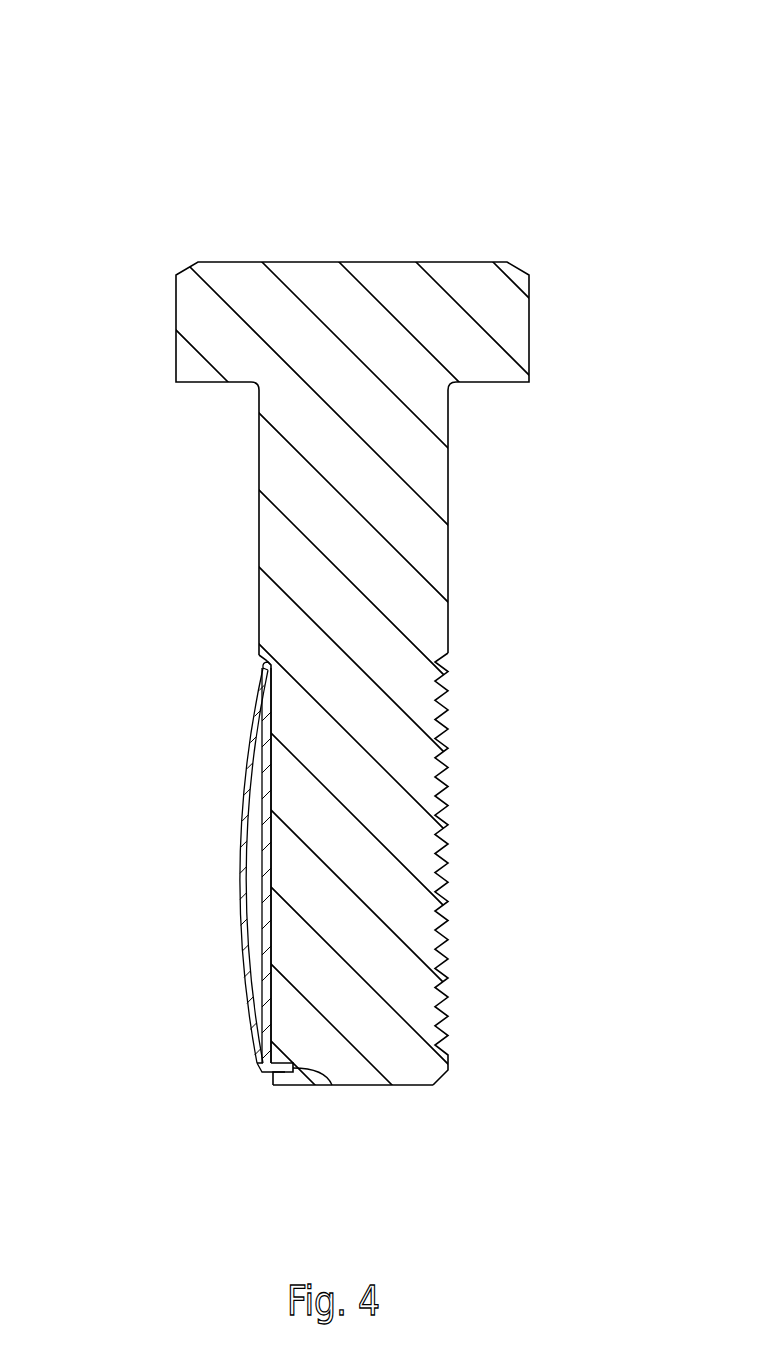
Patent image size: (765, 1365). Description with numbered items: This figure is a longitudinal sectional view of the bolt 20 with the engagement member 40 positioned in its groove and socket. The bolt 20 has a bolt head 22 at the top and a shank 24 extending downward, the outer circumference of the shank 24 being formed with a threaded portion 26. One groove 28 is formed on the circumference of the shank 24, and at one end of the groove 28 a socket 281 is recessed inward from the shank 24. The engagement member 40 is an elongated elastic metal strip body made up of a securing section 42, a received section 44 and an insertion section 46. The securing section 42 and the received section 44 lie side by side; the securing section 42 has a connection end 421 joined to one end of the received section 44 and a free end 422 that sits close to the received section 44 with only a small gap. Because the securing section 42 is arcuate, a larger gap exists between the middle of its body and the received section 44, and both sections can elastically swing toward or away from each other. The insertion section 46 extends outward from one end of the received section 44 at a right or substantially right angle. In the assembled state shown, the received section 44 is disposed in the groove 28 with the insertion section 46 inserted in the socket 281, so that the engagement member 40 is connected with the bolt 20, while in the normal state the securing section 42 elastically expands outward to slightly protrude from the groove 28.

The bolt 20 is at (228, 148).
The bolt head 22 is at (403, 297).
The shank 24 is at (423, 535).
The threaded portion 26 is at (438, 702).
The groove 28 is at (267, 663).
The socket 281 is at (285, 1072).
The engagement member 40 is at (175, 888).
The securing section 42 is at (247, 787).
The connection end 421 is at (270, 668).
The free end 422 is at (253, 1062).
The received section 44 is at (270, 922).
The insertion section 46 is at (323, 1071).